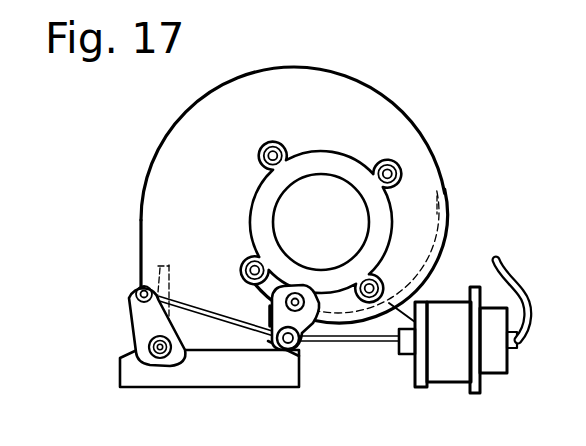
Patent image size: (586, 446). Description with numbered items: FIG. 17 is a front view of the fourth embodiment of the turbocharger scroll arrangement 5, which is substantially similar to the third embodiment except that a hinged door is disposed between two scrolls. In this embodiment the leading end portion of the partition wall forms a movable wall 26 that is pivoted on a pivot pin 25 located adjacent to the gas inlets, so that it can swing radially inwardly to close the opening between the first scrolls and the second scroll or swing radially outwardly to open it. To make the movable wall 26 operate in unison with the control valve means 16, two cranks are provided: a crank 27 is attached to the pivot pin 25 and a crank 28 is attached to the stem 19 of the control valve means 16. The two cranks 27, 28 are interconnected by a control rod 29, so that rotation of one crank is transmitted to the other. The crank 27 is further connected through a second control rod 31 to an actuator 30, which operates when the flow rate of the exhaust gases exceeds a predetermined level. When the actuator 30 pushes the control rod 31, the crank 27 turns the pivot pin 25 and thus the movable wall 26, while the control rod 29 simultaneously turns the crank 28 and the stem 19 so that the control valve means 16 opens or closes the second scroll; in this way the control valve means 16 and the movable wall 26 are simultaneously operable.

The blower housing 5 is at (410, 113).
The control valve means 16 is at (163, 278).
The stem 19 is at (157, 356).
The pivot pin 25 is at (299, 306).
The movable wall 26 is at (431, 234).
The crank 27 is at (295, 322).
The crank 28 is at (140, 312).
The control rod 29 is at (222, 322).
The actuator 30 is at (450, 371).
The control rod 31 is at (379, 341).